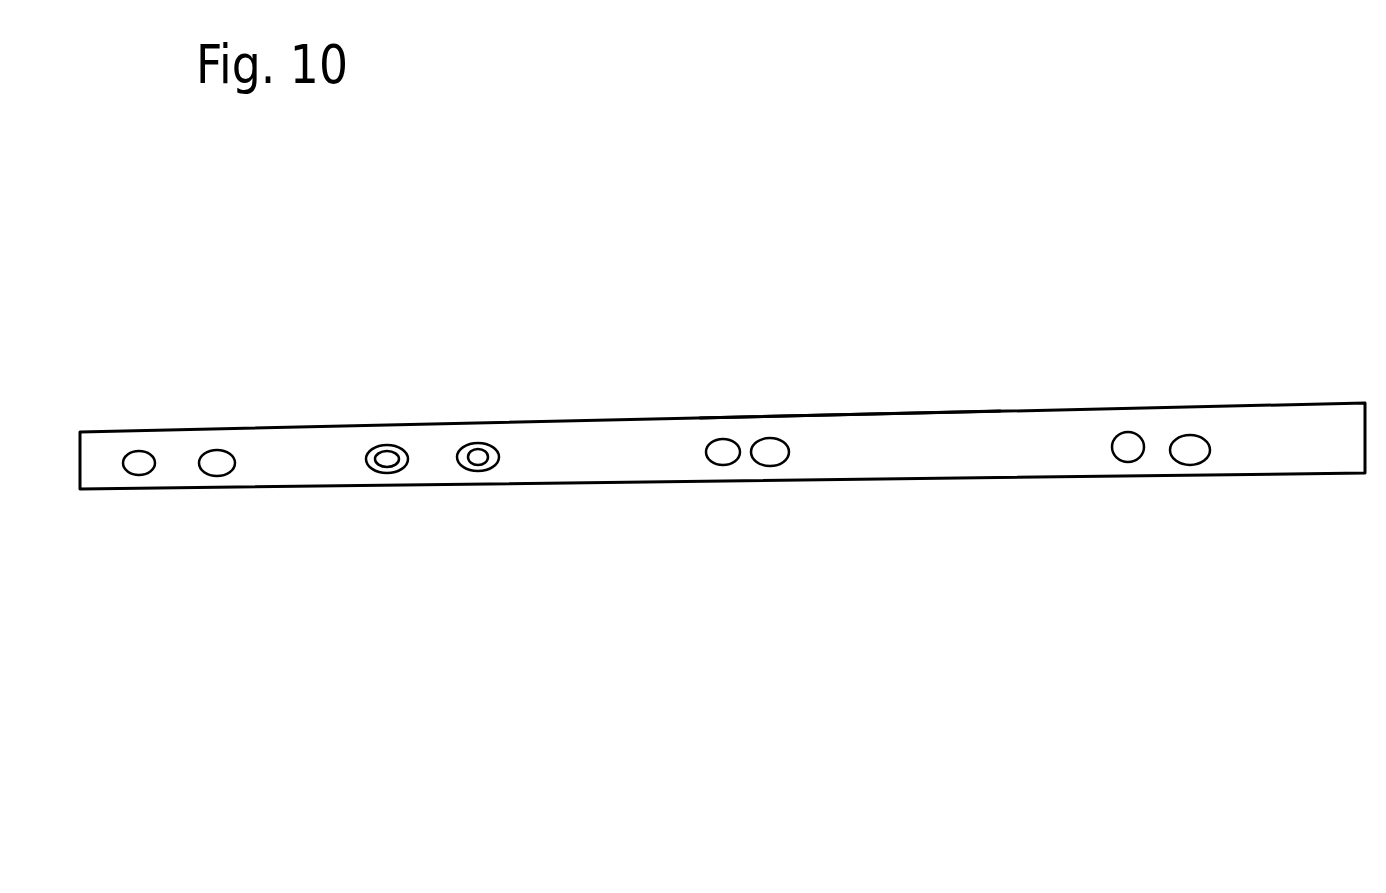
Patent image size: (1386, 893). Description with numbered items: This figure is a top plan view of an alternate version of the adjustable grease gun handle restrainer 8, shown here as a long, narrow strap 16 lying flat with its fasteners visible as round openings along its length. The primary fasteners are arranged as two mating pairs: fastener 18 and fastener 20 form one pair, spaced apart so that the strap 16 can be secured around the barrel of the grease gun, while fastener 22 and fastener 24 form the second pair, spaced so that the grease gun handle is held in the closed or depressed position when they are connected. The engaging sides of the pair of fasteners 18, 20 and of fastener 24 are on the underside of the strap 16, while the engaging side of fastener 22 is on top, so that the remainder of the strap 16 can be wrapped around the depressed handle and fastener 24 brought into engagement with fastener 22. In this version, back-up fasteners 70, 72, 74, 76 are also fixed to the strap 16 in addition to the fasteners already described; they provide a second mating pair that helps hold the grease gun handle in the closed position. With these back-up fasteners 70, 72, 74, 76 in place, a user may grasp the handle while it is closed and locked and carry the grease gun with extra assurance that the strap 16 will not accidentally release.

The restrainer 8 is at (515, 351).
The strap 16 is at (865, 430).
The fastener 18 is at (217, 462).
The fastener 20 is at (770, 455).
The fastener 22 is at (478, 463).
The fastener 24 is at (1192, 453).
The back-up fastener 70 is at (140, 462).
The back-up fastener 72 is at (385, 458).
The back-up fastener 74 is at (722, 462).
The back-up fastener 76 is at (1126, 453).